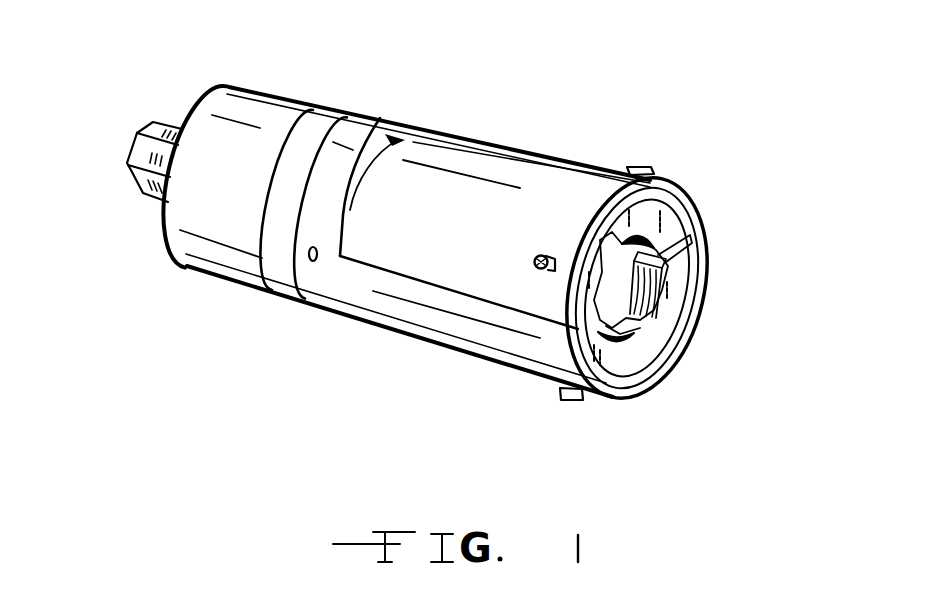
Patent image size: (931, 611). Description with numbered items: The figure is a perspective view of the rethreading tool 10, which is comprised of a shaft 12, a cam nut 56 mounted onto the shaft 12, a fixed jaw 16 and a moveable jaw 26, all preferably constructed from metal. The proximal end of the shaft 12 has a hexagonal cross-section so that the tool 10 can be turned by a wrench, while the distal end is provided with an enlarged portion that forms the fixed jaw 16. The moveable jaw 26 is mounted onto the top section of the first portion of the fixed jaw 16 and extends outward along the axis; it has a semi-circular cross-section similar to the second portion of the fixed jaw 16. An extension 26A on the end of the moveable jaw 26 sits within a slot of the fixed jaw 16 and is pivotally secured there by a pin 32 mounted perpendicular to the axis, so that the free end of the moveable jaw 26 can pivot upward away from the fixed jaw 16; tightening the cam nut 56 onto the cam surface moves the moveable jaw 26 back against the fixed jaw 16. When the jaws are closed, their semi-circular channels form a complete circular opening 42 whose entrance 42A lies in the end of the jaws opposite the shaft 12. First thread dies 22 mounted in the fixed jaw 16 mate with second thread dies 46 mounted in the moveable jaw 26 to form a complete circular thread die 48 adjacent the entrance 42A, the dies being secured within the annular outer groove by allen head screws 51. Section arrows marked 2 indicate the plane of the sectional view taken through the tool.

The rethreading tool 10 is at (508, 66).
The shaft 12 is at (142, 180).
The fixed jaw 16 is at (440, 325).
The first thread dies 22 is at (668, 306).
The moveable jaw 26 is at (510, 158).
The extension 26A is at (378, 118).
The pin 32 is at (314, 262).
The complete circular opening 42 is at (606, 298).
The entrance 42A is at (628, 358).
The second thread dies 46 is at (650, 204).
The complete circular thread die 48 is at (652, 316).
The screws 51 is at (532, 262).
The cam nut 56 is at (253, 118).
The section line 2- 2 is at (40, 106).